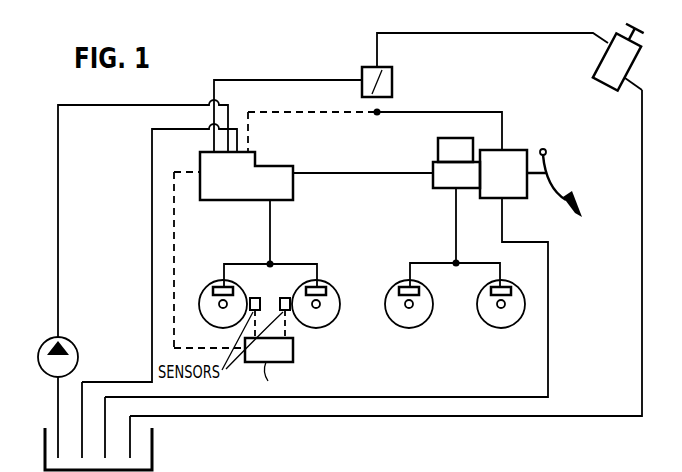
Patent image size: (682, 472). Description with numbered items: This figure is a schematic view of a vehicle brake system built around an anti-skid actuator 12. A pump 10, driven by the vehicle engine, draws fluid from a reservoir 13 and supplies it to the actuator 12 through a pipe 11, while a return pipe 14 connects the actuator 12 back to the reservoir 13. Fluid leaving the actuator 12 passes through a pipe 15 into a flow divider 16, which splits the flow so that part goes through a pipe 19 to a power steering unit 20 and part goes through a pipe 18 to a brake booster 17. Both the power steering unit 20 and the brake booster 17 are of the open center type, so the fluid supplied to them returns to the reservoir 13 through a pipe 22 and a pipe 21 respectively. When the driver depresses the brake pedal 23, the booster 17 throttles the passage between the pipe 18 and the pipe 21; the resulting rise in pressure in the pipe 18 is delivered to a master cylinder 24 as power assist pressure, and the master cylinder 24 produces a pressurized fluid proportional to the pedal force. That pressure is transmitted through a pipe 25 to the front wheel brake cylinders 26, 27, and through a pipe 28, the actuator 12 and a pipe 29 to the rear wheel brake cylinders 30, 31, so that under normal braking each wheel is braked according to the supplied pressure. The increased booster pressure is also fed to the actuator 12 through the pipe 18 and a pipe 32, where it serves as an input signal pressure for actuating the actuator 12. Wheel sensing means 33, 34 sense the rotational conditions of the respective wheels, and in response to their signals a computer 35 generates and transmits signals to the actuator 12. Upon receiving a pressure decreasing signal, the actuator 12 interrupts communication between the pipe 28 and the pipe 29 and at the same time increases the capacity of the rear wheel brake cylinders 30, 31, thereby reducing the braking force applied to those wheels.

The pump 10 is at (78, 356).
The pipe 11 is at (59, 252).
The anti-skid actuator 12 is at (283, 160).
The reservoir 13 is at (51, 440).
The return pipe 14 is at (150, 250).
The pipe 15 is at (296, 80).
The flow divider 16 is at (393, 88).
The brake booster 17 is at (512, 150).
The pipe 18 is at (470, 112).
The pipe 19 is at (492, 34).
The power steering unit 20 is at (605, 93).
The pipe 21 is at (549, 333).
The pipe 22 is at (643, 292).
The brake pedal 23 is at (553, 186).
The master cylinder 24 is at (430, 165).
The pipe 25 is at (455, 236).
The front wheel brake cylinder 26 is at (403, 285).
The front wheel brake cylinder 27 is at (509, 285).
The pipe 28 is at (378, 175).
The pipe 29 is at (272, 252).
The rear wheel brake cylinder 30 is at (215, 284).
The rear wheel brake cylinder 31 is at (326, 285).
The pipe 32 is at (308, 116).
The wheel sensing means 33 is at (255, 297).
The wheel sensing means 34 is at (285, 297).
The computer 35 is at (293, 357).